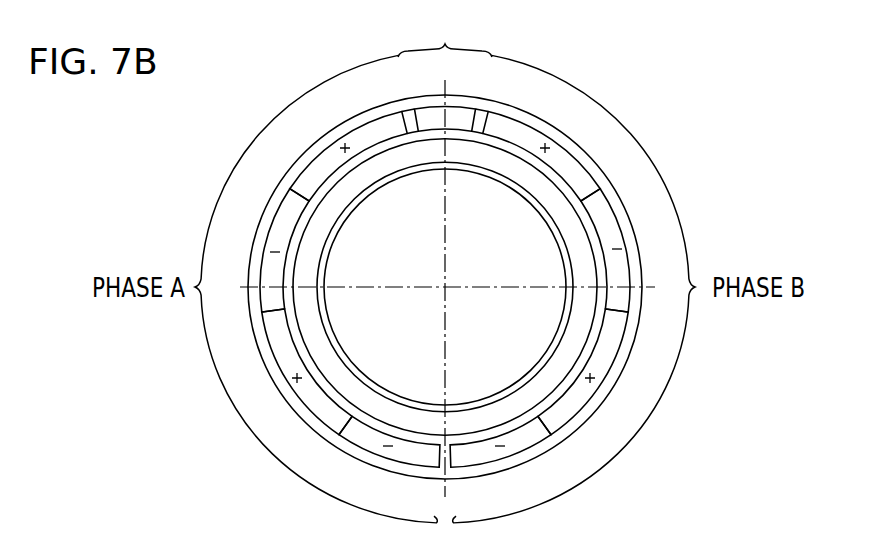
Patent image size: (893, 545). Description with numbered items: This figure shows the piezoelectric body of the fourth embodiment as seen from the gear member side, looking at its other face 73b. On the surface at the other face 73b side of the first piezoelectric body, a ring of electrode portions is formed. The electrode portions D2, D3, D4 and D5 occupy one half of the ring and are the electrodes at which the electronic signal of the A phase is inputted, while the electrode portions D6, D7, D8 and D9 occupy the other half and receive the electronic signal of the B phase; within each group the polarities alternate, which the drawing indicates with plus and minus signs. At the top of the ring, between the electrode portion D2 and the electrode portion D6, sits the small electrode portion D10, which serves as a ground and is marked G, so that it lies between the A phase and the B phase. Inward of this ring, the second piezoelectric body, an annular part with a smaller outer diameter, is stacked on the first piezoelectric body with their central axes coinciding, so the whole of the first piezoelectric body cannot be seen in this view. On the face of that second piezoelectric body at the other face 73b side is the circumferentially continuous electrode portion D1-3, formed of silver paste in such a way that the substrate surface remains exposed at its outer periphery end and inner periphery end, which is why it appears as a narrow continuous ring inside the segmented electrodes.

The other face 73b is at (690, 160).
The gap / ground reference region G is at (445, 37).
The circumferentially continuous electrode portion D1-3 is at (315, 233).
The electrode portion D2 is at (360, 137).
The electrode portion D3 is at (279, 238).
The electrode portion D4 is at (327, 411).
The electrode portion D5 is at (412, 455).
The electrode portion D6 is at (530, 137).
The electrode portion D7 is at (611, 238).
The electrode portion D8 is at (563, 411).
The electrode portion D9 is at (478, 455).
The electrode portion D10 is at (453, 126).